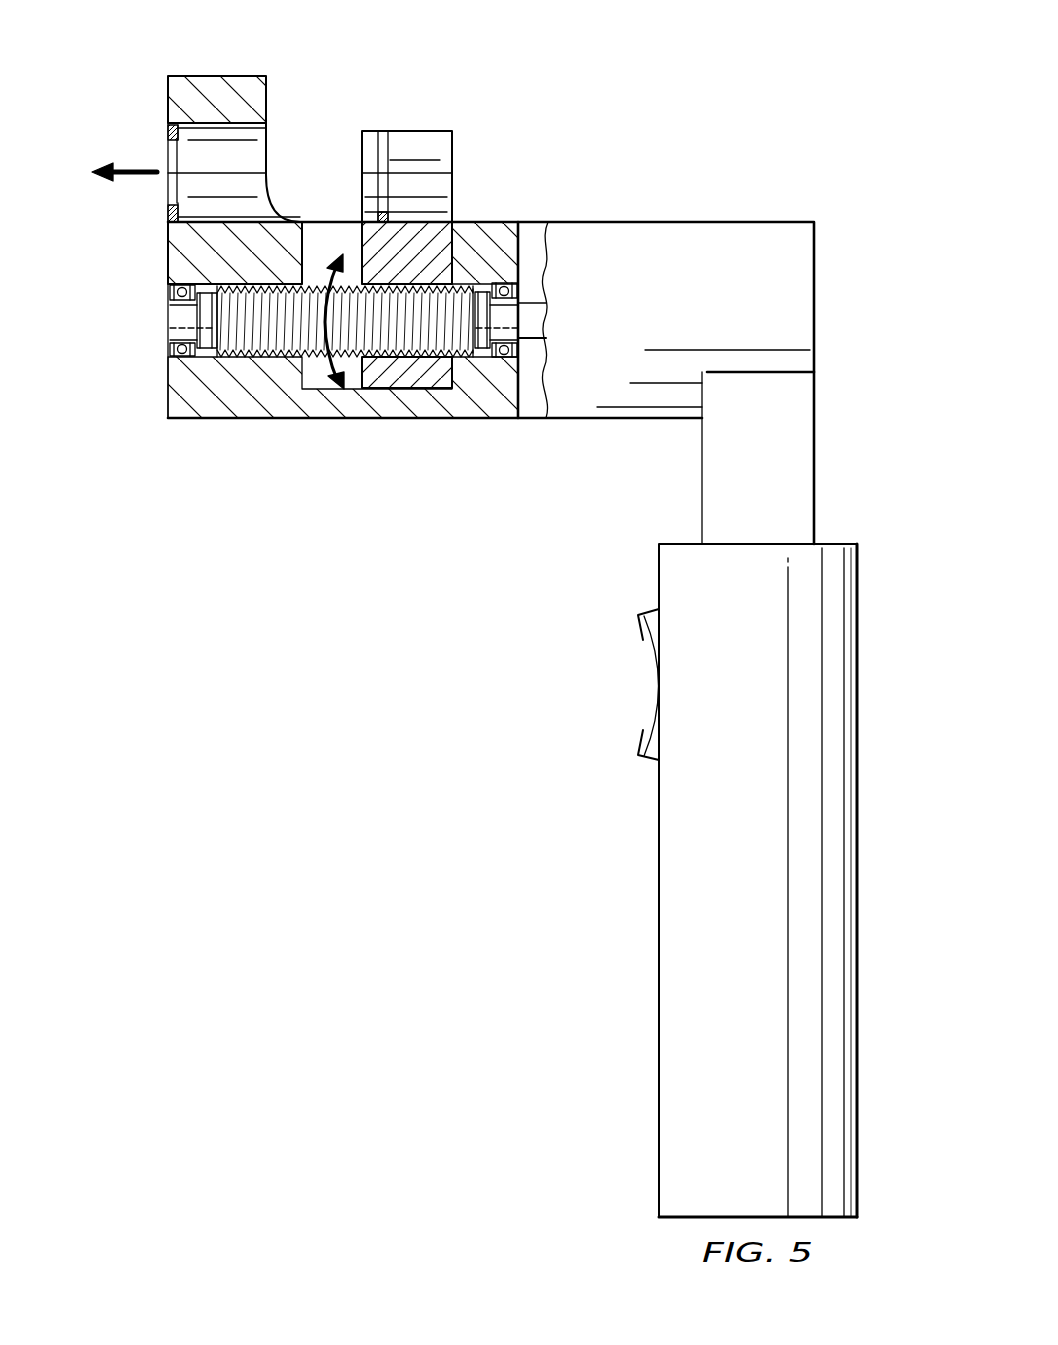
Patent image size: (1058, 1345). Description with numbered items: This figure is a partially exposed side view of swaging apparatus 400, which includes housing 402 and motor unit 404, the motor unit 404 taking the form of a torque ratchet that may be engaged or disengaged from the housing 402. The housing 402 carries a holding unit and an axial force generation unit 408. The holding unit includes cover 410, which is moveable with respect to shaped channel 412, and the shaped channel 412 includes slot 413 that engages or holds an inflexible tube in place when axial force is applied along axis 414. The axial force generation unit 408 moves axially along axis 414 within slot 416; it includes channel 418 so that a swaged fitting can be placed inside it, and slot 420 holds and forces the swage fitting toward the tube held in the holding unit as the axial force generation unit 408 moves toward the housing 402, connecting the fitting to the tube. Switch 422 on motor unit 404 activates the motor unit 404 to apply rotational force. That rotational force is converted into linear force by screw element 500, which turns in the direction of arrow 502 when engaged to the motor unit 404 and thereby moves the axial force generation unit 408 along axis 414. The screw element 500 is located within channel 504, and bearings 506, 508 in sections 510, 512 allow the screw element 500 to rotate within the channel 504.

The swaging apparatus 400 is at (749, 177).
The housing 402 is at (654, 221).
The motor unit 404 is at (858, 747).
The axial force generation unit 408 is at (437, 130).
The cover 410 is at (195, 74).
The shaped channel 412 is at (167, 196).
The slot 413 is at (167, 126).
The axis 414 is at (100, 165).
The slot 416 is at (331, 235).
The channel 418 is at (438, 155).
The slot 420 is at (368, 130).
The switch 422 is at (644, 642).
The screw element 500 is at (267, 358).
The arrow 502 is at (312, 383).
The channel 504 is at (203, 358).
The bearing 506 is at (167, 350).
The bearing 508 is at (520, 291).
The section 510 is at (166, 262).
The section 512 is at (520, 346).